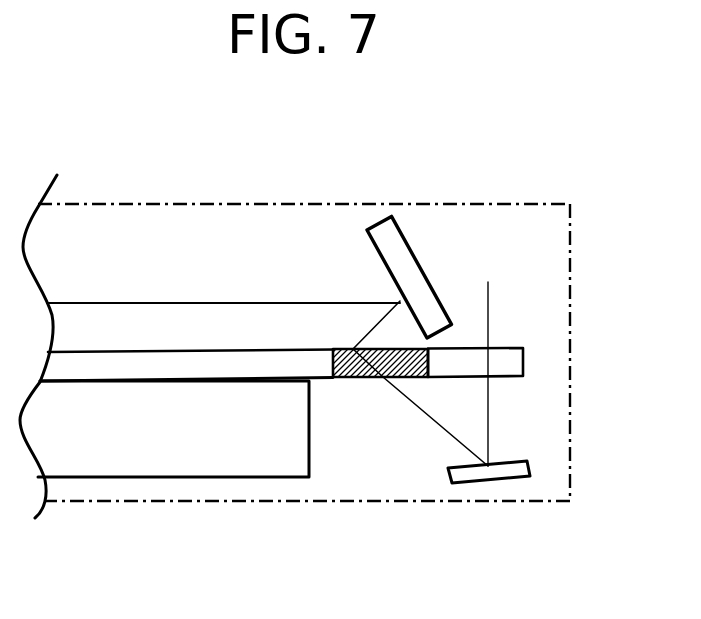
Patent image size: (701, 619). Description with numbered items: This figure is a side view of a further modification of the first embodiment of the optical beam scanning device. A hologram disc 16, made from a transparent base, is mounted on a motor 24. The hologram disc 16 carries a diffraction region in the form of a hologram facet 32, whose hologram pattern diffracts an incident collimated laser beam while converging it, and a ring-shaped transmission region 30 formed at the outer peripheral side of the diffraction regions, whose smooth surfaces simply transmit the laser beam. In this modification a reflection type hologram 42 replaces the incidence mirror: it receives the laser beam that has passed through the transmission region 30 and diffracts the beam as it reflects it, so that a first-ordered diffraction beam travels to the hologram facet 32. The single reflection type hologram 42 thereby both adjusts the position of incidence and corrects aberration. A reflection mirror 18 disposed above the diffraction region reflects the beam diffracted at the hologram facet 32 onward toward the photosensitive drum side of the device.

The hologram disc 16 is at (173, 363).
The reflection mirror 18 is at (408, 265).
The motor 24 is at (165, 447).
The transmission region 30 is at (507, 360).
The hologram facet 32 is at (352, 380).
The reflection type hologram 42 is at (507, 472).